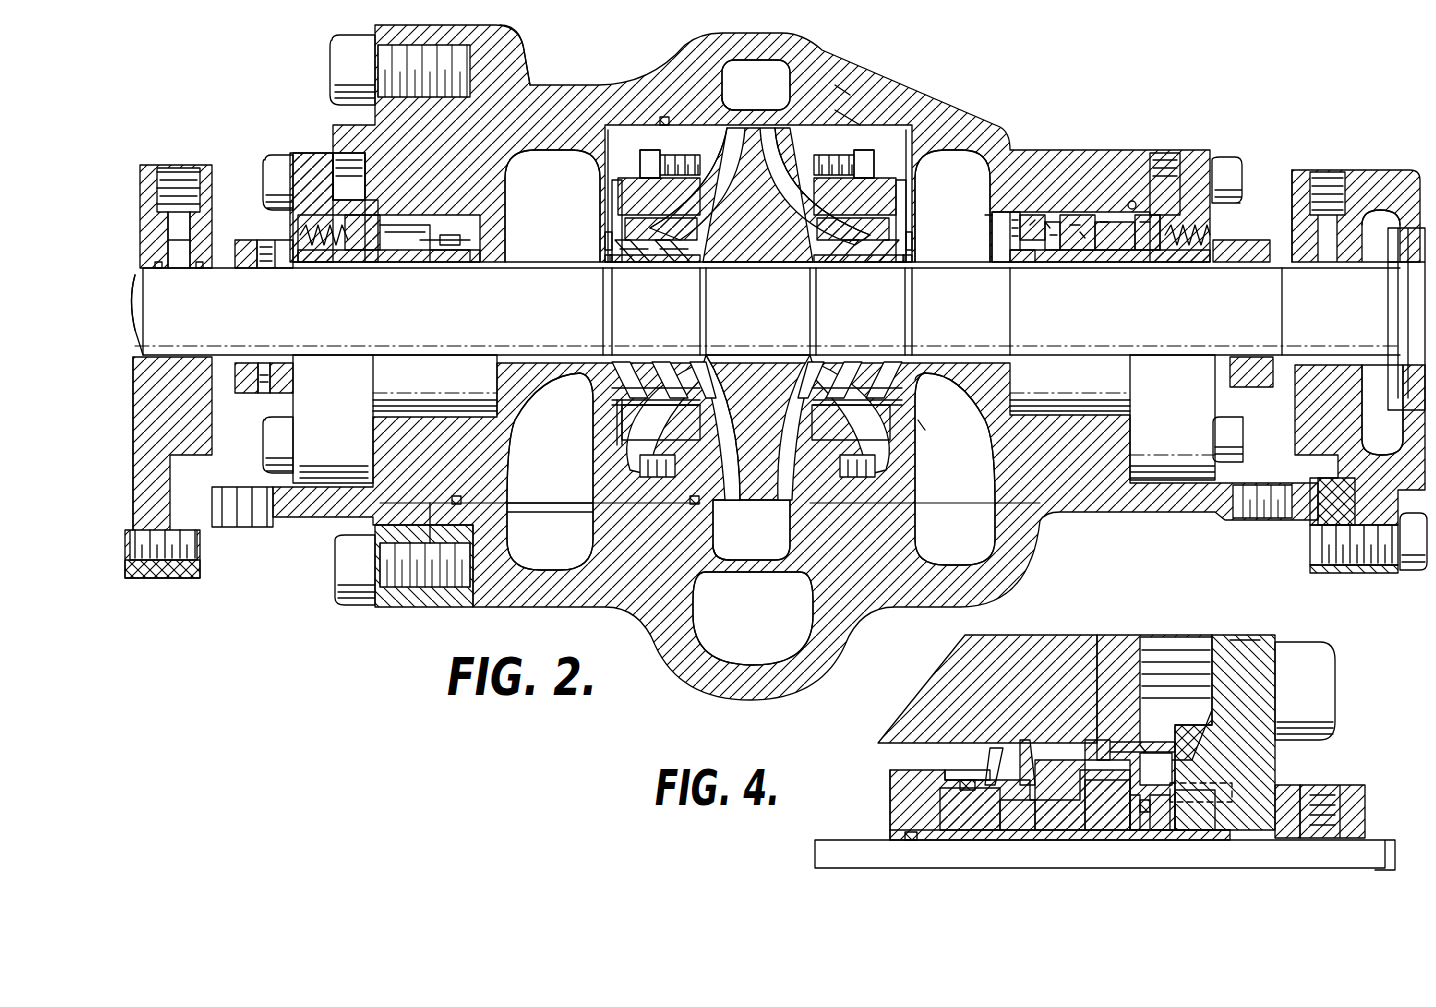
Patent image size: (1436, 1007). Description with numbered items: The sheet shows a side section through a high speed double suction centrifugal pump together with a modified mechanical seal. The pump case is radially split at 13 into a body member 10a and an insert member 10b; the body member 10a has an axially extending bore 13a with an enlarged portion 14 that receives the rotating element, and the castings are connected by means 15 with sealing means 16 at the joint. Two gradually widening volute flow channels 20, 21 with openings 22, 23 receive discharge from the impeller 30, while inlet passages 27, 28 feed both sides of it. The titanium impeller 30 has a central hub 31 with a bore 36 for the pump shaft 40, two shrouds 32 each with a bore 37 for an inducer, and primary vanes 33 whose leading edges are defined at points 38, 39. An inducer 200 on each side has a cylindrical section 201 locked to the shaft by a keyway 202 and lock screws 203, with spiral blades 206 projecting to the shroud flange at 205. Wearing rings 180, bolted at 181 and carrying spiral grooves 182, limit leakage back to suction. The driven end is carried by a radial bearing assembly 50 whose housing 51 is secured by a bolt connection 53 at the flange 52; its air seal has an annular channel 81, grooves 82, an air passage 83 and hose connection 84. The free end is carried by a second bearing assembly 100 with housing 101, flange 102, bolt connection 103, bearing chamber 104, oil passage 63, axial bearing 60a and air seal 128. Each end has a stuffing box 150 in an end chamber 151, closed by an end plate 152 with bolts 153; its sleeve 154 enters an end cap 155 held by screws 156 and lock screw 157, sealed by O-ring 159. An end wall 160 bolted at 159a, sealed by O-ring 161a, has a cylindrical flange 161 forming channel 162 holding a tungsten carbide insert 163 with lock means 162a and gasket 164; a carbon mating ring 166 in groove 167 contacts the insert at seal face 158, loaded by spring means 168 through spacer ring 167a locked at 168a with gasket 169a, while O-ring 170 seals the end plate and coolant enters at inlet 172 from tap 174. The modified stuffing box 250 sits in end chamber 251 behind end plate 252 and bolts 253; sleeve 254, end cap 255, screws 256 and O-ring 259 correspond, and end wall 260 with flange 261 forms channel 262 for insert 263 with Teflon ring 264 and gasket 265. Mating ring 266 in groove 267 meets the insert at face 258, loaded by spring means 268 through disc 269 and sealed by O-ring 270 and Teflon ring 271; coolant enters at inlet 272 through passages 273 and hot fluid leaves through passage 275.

In FIG. 2, the body member 10a is at (890, 607).
In FIG. 4, the body member 10a is at (1095, 645).
In FIG. 2, the insert member 10b is at (515, 100).
In FIG. 2, the radial split 13 is at (430, 597).
In FIG. 2, the axially extending bore 13a is at (913, 378).
In FIG. 2, the enlarged portion of bore 14 is at (430, 127).
In FIG. 2, the connecting means 15 is at (498, 45).
In FIG. 2, the sealing means 16 is at (662, 117).
In FIG. 2, the flow channel 20 is at (753, 362).
In FIG. 2, the flow channel 21 is at (751, 530).
In FIG. 2, the opening 22 is at (785, 80).
In FIG. 2, the opening 23 is at (713, 550).
In FIG. 2, the inlet passage 27 is at (954, 357).
In FIG. 2, the inlet passage 28 is at (552, 360).
In FIG. 2, the double suction impeller 30 is at (850, 118).
In FIG. 2, the central hub 31 is at (712, 125).
In FIG. 2, the shroud 32 is at (664, 165).
In FIG. 2, the primary vane 33 is at (725, 515).
In FIG. 2, the bore 36 is at (705, 262).
In FIG. 2, the bore 37 is at (758, 336).
In FIG. 2, the leading edge point 38 is at (772, 255).
In FIG. 2, the leading edge point 39 is at (770, 312).
In FIG. 2, the pump shaft 40 is at (135, 290).
In FIG. 4, the pump shaft 40 is at (1105, 855).
In FIG. 2, the radial bearing assembly 50 is at (162, 165).
In FIG. 2, the housing 51 is at (134, 470).
In FIG. 2, the flange 52 is at (145, 567).
In FIG. 2, the bolt connection 53 is at (200, 551).
In FIG. 2, the axial bearing 60a is at (1395, 312).
In FIG. 2, the passage 63 is at (1400, 440).
In FIG. 2, the annular channel 81 is at (183, 270).
In FIG. 2, the annular grooves 82 is at (157, 270).
In FIG. 2, the passage 83 is at (180, 228).
In FIG. 2, the air hose connection 84 is at (190, 172).
In FIG. 2, the second bearing assembly 100 is at (1385, 165).
In FIG. 2, the housing 101 is at (1352, 170).
In FIG. 2, the flange 102 is at (1383, 575).
In FIG. 2, the bolt connection 103 is at (1337, 567).
In FIG. 2, the axial bearing chamber 104 is at (1378, 212).
In FIG. 2, the air seal 128 is at (1327, 240).
In FIG. 2, the stuffing box 150 is at (292, 215).
In FIG. 2, the end chamber 151 is at (924, 432).
In FIG. 2, the end plate 152 is at (270, 430).
In FIG. 2, the bolts 153 is at (276, 157).
In FIG. 2, the sleeve 154 is at (355, 263).
In FIG. 2, the end cap 155 is at (243, 245).
In FIG. 2, the screws 156 is at (282, 252).
In FIG. 2, the lock screw 157 is at (290, 388).
In FIG. 2, the seal face 158 is at (1082, 232).
In FIG. 2, the O-ring 159 is at (1068, 262).
In FIG. 2, the bolt means 159a is at (1025, 262).
In FIG. 2, the end wall 160 is at (1000, 250).
In FIG. 2, the cylindrical flange 161 is at (1075, 222).
In FIG. 2, the O-ring 161a is at (1050, 258).
In FIG. 2, the annular channel 162 is at (1032, 222).
In FIG. 2, the lock means 162a is at (990, 215).
In FIG. 2, the cylindrical insert 163 is at (1090, 275).
In FIG. 2, the gasket 164 is at (1050, 222).
In FIG. 2, the mating ring 166 is at (1117, 262).
In FIG. 2, the annular groove 167 is at (1145, 222).
In FIG. 2, the spacer ring 167a is at (1190, 262).
In FIG. 2, the spring means 168 is at (1200, 247).
In FIG. 2, the locking means 168a is at (1103, 222).
In FIG. 2, the gasket member 169a is at (1150, 250).
In FIG. 2, the O-ring 170 is at (1131, 200).
In FIG. 2, the coolant inlet 172 is at (340, 155).
In FIG. 2, the tap inlet 174 is at (835, 88).
In FIG. 2, the wearing ring 180 is at (620, 190).
In FIG. 2, the bolt 181 is at (640, 150).
In FIG. 2, the spiral grooves 182 is at (935, 95).
In FIG. 2, the inducer 200 is at (612, 245).
In FIG. 2, the cylindrical section 201 is at (600, 332).
In FIG. 2, the keyway 202 is at (663, 320).
In FIG. 2, the lock screws 203 is at (607, 262).
In FIG. 2, the inner surface of shroud flange 205 is at (630, 263).
In FIG. 2, the spiral blades 206 is at (610, 243).
In FIG. 4, the stuffing box 250 is at (1255, 632).
In FIG. 4, the end chamber 251 is at (890, 754).
In FIG. 4, the end plate 252 is at (1288, 640).
In FIG. 4, the bolts 253 is at (1330, 660).
In FIG. 4, the sleeve 254 is at (968, 843).
In FIG. 4, the end cap 255 is at (1328, 800).
In FIG. 4, the screws 256 is at (1318, 792).
In FIG. 4, the seal face 258 is at (1040, 765).
In FIG. 4, the O-ring 259 is at (912, 843).
In FIG. 4, the end wall 260 is at (905, 803).
In FIG. 4, the cylindrical flange 261 is at (955, 780).
In FIG. 4, the annular channel 262 is at (940, 792).
In FIG. 4, the cylindrical insert 263 is at (1020, 832).
In FIG. 4, the Teflon ring 264 is at (995, 748).
In FIG. 4, the gasket 265 is at (965, 782).
In FIG. 4, the mating ring 266 is at (1062, 832).
In FIG. 4, the annular groove 267 is at (1187, 818).
In FIG. 4, the spring means 268 is at (1218, 812).
In FIG. 4, the disc 269 is at (1158, 818).
In FIG. 4, the O-ring 270 is at (1142, 818).
In FIG. 4, the Teflon ring 271 is at (1115, 822).
In FIG. 4, the coolant inlet 272 is at (1182, 640).
In FIG. 4, the passages 273 is at (1085, 740).
In FIG. 4, the passage 275 is at (1022, 740).